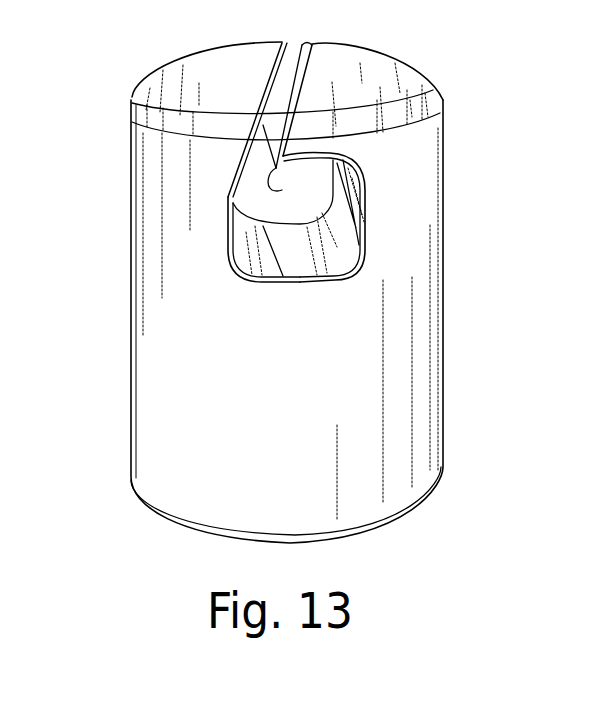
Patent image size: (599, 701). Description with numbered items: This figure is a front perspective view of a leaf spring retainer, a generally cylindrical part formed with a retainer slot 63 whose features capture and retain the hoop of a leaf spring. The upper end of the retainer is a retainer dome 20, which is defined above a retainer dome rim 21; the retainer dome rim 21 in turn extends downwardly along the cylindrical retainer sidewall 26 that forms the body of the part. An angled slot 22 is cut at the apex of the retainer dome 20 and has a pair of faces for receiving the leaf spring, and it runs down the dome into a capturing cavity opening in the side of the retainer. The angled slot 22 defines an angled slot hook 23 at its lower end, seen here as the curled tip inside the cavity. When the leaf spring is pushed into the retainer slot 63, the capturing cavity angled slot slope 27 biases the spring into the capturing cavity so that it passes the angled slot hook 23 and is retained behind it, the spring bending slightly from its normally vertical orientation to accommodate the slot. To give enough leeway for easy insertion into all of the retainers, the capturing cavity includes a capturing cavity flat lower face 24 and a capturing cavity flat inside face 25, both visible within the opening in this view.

The retainer dome 20 is at (227, 72).
The retainer dome rim 21 is at (131, 99).
The angled slot 22 is at (288, 85).
The angled slot hook 23 is at (293, 185).
The capturing cavity flat lower face 24 is at (300, 253).
The capturing cavity flat inside face 25 is at (352, 207).
The cylindrical retainer sidewall 26 is at (128, 352).
The capturing cavity angled slot slope 27 is at (243, 263).
The retainer slot 63 is at (222, 207).